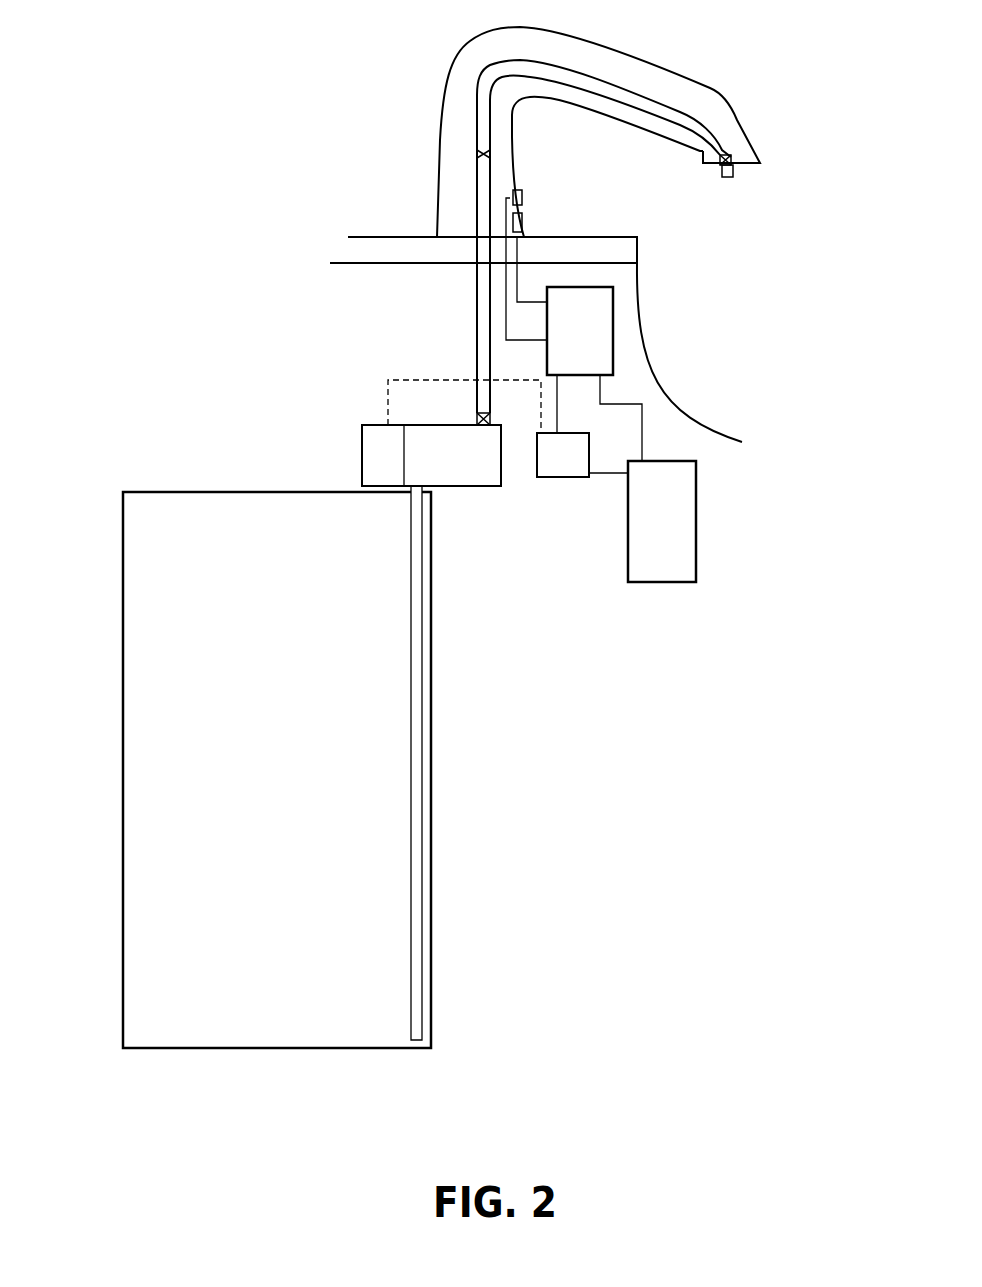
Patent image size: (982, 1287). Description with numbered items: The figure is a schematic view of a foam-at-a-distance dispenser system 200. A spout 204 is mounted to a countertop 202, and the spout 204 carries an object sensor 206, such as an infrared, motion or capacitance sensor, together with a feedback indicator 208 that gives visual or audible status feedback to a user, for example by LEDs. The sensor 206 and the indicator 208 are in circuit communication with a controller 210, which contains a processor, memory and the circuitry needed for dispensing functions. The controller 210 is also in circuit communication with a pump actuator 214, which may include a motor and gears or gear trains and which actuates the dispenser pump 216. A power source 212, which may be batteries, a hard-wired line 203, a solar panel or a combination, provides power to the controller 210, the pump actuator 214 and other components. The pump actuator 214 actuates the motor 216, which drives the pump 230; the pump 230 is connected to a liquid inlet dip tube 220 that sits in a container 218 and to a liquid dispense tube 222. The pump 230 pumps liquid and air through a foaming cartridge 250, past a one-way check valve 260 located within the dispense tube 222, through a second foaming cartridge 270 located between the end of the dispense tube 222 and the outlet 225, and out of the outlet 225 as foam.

The foam-at-a-distance dispenser system 200 is at (152, 404).
The mounting surface / sink deck 202 is at (415, 233).
The power cord 203 is at (713, 430).
The spout 204 is at (593, 43).
The object sensor 206 is at (522, 188).
The feedback indicator 208 is at (522, 220).
The controller 210 is at (613, 321).
The power source 212 is at (697, 524).
The pump actuator 214 is at (555, 478).
The dispenser pump 216 is at (362, 453).
The container 218 is at (123, 527).
The liquid inlet dip tube 220 is at (417, 723).
The dispense tube 222 is at (637, 108).
The outlet 225 is at (732, 177).
The pump 230 is at (490, 487).
The foaming cartridge 250 is at (477, 418).
The one-way check valve 260 is at (477, 155).
The foaming cartridge 270 is at (727, 155).